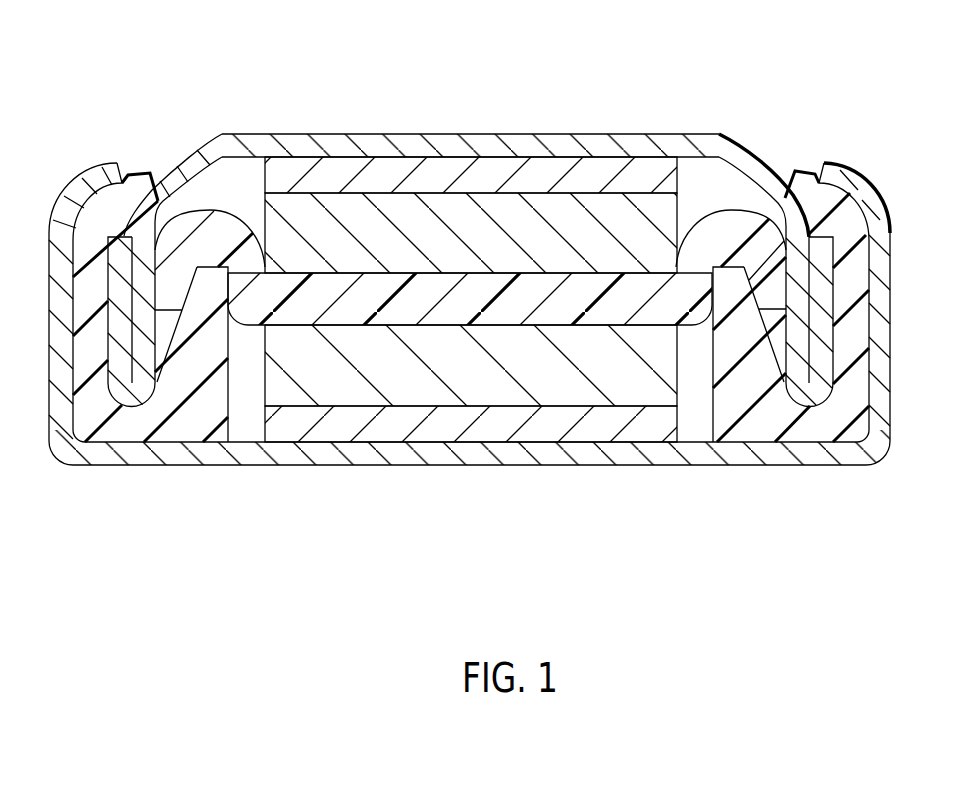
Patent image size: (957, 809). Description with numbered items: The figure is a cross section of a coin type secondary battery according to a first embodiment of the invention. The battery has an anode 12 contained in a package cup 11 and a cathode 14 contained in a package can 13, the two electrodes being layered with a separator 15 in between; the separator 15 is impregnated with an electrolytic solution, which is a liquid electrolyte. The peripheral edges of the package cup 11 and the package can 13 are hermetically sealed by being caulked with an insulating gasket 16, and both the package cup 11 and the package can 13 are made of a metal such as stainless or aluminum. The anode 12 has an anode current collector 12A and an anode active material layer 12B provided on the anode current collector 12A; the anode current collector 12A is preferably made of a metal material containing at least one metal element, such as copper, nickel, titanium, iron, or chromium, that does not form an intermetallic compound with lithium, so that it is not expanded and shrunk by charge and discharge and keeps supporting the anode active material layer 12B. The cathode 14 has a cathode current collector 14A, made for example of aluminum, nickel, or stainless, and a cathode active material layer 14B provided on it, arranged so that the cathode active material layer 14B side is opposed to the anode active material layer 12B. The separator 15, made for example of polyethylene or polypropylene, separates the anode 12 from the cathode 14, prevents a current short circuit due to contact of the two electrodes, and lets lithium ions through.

The package cup 11 is at (251, 148).
The anode 12 is at (471, 136).
The anode current collector 12A is at (379, 165).
The anode active material layer 12B is at (353, 67).
The package can 13 is at (328, 452).
The cathode 14 is at (471, 467).
The cathode current collector 14A is at (476, 428).
The cathode active material layer 14B is at (615, 392).
The separator 15 is at (737, 235).
The insulating gasket 16 is at (181, 430).